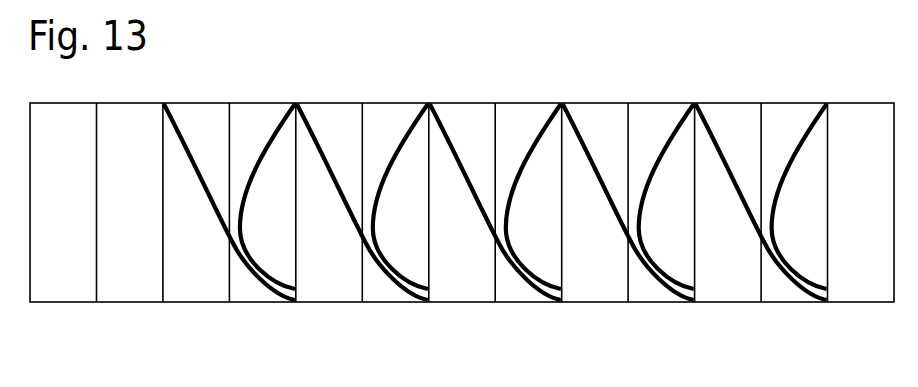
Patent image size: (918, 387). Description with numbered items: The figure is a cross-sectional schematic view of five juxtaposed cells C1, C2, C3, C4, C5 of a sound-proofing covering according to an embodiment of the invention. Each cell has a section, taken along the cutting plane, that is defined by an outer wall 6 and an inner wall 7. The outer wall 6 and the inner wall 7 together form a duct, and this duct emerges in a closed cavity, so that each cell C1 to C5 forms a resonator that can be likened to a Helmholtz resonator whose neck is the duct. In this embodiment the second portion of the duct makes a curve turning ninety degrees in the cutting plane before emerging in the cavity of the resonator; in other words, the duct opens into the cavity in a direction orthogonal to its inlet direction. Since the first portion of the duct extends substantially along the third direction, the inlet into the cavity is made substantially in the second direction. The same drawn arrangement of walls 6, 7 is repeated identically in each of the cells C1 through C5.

The cell C1 is at (229, 194).
The cell C2 is at (340, 125).
The cell C3 is at (470, 118).
The cell C4 is at (610, 127).
The cell C5 is at (740, 125).
The outer wall 6 is at (218, 228).
The inner wall 7 is at (276, 132).